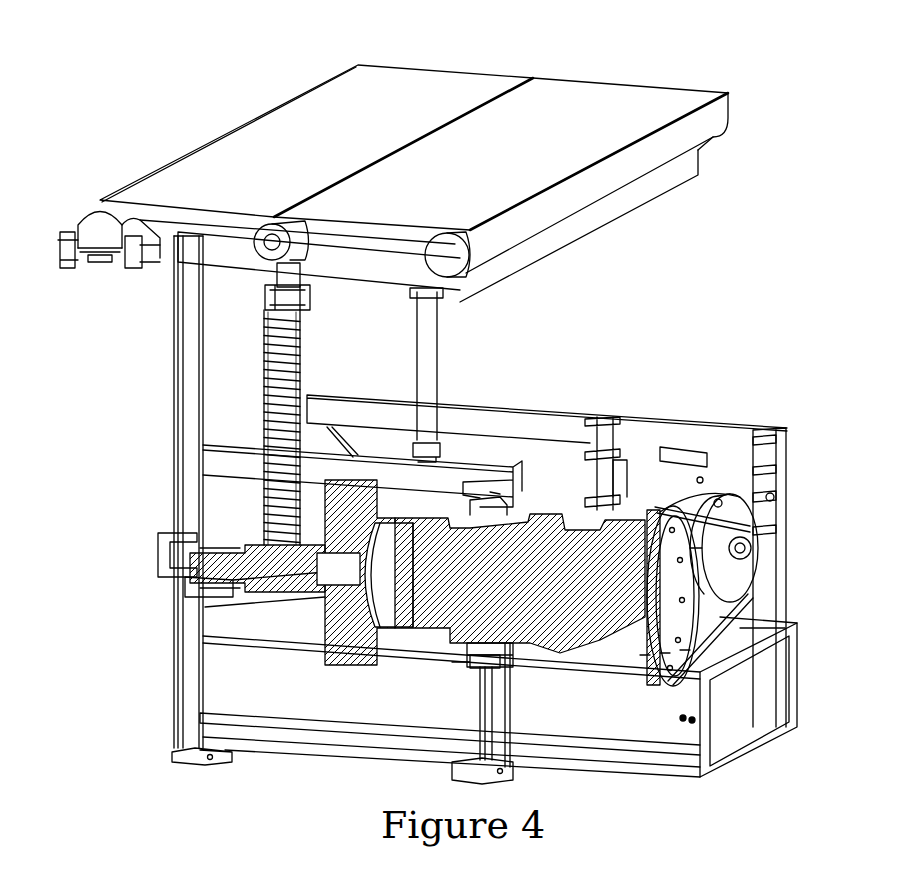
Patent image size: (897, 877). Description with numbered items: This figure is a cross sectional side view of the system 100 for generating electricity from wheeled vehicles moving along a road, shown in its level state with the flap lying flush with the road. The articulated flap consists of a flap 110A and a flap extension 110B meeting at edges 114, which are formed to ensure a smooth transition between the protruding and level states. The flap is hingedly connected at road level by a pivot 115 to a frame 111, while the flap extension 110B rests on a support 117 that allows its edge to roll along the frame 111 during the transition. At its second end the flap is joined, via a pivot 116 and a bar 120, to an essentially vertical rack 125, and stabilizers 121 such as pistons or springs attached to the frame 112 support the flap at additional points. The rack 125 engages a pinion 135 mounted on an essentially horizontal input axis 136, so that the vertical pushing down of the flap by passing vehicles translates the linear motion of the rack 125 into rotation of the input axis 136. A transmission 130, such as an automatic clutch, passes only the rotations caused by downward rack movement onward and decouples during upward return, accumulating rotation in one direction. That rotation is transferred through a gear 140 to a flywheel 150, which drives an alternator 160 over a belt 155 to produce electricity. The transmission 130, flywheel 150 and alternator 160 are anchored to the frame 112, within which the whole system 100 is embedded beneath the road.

The system 100 is at (56, 106).
The flap 110A is at (405, 80).
The flap extension 110B is at (672, 97).
The edges 114 is at (543, 69).
The frame 111 is at (680, 172).
The pivot 115 is at (97, 230).
The pivot 116 is at (270, 243).
The support 117 is at (450, 256).
The bar 120 is at (266, 288).
The stabilizers 121 is at (430, 354).
The rack 125 is at (256, 376).
The input axis 136 is at (230, 556).
The pinion 135 is at (247, 582).
The transmission 130 is at (340, 662).
The gear 140 is at (540, 637).
The flywheel 150 is at (646, 674).
The belt 155 is at (740, 598).
The alternator 160 is at (730, 505).
The frame 112 is at (330, 769).